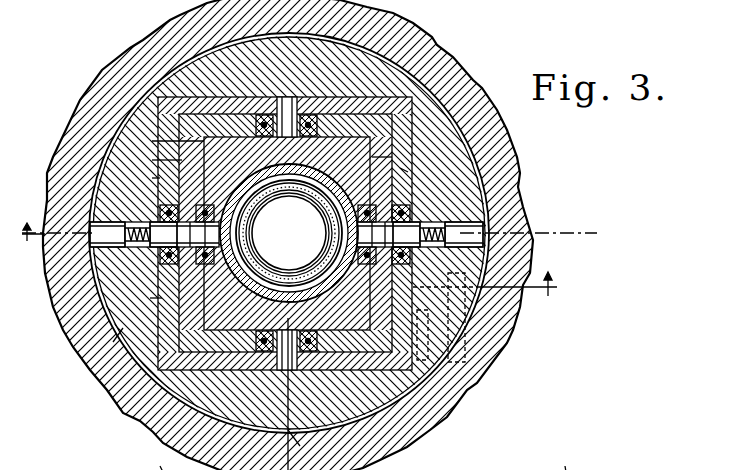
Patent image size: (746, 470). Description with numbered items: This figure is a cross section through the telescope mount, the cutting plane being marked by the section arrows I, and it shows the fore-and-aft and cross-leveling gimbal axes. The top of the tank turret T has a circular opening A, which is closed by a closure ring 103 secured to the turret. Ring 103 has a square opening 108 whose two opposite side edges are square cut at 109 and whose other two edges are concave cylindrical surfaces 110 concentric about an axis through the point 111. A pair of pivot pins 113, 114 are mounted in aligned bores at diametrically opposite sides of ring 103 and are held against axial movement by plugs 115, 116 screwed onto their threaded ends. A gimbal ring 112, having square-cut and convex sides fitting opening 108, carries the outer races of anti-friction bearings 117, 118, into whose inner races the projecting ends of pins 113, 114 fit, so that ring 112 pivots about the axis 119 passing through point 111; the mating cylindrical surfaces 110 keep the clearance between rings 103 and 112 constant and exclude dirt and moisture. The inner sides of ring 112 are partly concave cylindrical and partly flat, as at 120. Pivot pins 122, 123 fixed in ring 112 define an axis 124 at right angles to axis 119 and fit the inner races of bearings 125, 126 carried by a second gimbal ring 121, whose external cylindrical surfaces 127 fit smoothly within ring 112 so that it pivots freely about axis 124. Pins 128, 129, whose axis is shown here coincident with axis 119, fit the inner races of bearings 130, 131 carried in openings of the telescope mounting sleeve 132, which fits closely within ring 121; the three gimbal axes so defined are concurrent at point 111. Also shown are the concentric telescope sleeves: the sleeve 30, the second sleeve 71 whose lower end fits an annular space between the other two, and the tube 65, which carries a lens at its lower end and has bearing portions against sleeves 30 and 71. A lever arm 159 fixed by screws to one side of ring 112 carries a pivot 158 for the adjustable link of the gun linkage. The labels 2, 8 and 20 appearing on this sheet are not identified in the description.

The central bearing block 2 is at (316, 178).
The conduit 8 is at (566, 466).
The frame 20 is at (160, 466).
The sleeve 30 is at (308, 264).
The tube 65 is at (262, 214).
The second sleeve 71 is at (273, 262).
The closure ring 103 is at (102, 346).
The square opening 108 is at (140, 178).
The square-cut side edges 109 is at (418, 133).
The concave cylindrical edges 110 is at (210, 97).
The pivot point 111 is at (284, 224).
The gimbal ring 112 is at (404, 170).
The pivot pin 113 is at (149, 248).
The pivot pin 114 is at (412, 224).
The plug 115 is at (90, 251).
The plug 116 is at (483, 240).
The anti-friction bearing 117 is at (162, 210).
The anti-friction bearing 118 is at (410, 252).
The axis 119 is at (547, 233).
The flat sides 120 is at (343, 110).
The second gimbal ring 121 is at (243, 360).
The pivot pin 122 is at (296, 371).
The pivot pin 123 is at (291, 97).
The axis 124 is at (312, 445).
The bearing 125 is at (258, 125).
The bearing 126 is at (318, 342).
The cylindrical surfaces 127 is at (421, 150).
The pin 128 is at (210, 200).
The pin 129 is at (364, 201).
The anti-friction bearing 130 is at (208, 264).
The anti-friction bearing 131 is at (363, 264).
The telescope mounting sleeve 132 is at (162, 141).
The pivot 158 is at (468, 327).
The lever arm 159 is at (489, 346).
The circular opening A is at (376, 416).
The top of the tank turret T is at (437, 422).
The section line I is at (287, 260).